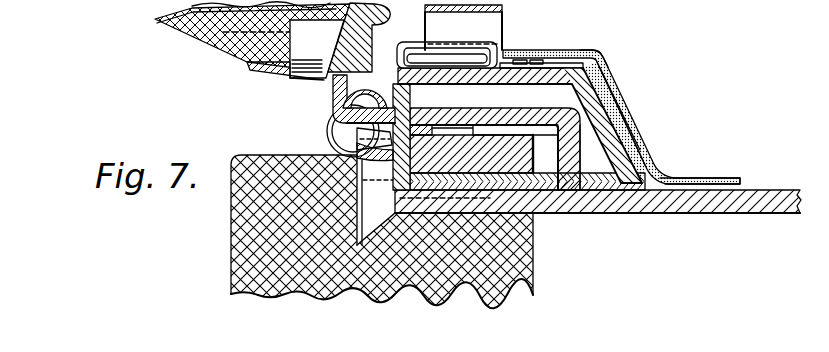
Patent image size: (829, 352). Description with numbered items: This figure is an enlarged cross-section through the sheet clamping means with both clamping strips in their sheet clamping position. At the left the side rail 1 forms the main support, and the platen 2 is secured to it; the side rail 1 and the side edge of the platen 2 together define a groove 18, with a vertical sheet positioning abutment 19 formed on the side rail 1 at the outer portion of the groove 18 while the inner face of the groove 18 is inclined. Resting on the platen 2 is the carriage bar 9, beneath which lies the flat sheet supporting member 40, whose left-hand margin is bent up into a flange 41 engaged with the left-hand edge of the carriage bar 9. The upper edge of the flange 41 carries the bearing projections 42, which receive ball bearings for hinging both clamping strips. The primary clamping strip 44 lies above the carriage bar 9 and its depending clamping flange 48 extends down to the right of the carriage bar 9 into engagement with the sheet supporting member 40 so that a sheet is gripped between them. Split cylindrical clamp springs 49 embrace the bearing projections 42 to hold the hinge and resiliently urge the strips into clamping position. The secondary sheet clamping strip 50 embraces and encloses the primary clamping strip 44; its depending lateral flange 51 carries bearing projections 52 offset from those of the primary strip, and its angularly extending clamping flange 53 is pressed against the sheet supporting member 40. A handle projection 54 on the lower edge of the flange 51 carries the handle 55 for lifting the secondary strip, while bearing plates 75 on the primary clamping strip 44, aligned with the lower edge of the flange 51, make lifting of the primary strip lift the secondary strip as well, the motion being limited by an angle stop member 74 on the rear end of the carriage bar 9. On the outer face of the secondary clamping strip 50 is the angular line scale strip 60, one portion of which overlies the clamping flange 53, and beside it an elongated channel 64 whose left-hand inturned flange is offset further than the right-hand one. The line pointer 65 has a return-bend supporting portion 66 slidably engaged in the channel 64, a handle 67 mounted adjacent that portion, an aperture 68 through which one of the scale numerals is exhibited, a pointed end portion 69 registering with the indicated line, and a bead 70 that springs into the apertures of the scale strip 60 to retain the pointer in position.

The side rail 1 is at (232, 249).
The platen 2 is at (621, 215).
The carriage bar 9 is at (526, 150).
The groove 18 is at (368, 262).
The sheet positioning abutment 19 is at (385, 232).
The sheet supporting member 40 is at (590, 196).
The flange 41 is at (368, 182).
The bearing projections 42 is at (359, 131).
The primary clamping strip 44 is at (535, 118).
The clamping flange 48 is at (572, 158).
The split cylindrical clamp springs 49 is at (327, 129).
The secondary sheet clamping strip 50 is at (546, 70).
The lateral flange 51 is at (412, 96).
The bearing projections 52 is at (372, 91).
The clamping flange 53 is at (622, 150).
The handle projection 54 is at (276, 66).
The handle 55 is at (214, 30).
The line scale strip 60 is at (569, 66).
The channel 64 is at (497, 54).
The line pointer 65 is at (636, 130).
The supporting portion 66 is at (432, 55).
The handle 67 is at (504, 20).
The aperture 68 is at (598, 52).
The pointed end portion 69 is at (730, 177).
The bead 70 is at (604, 94).
The angle stop member 74 is at (476, 98).
The bearing plates 75 is at (450, 110).